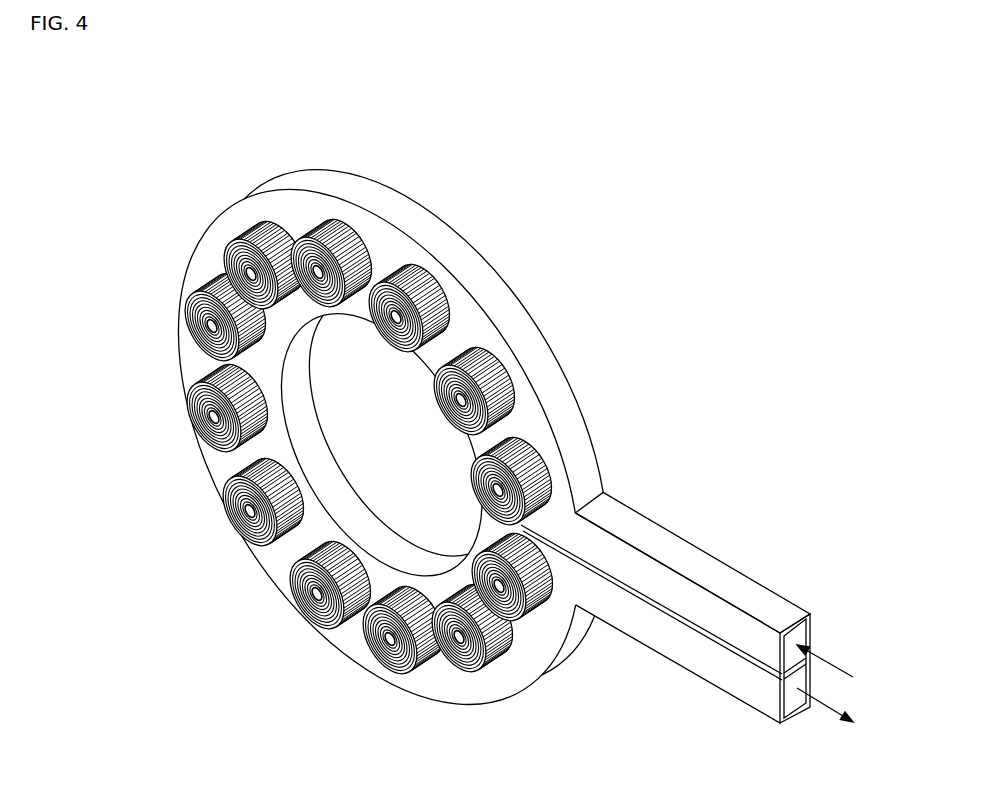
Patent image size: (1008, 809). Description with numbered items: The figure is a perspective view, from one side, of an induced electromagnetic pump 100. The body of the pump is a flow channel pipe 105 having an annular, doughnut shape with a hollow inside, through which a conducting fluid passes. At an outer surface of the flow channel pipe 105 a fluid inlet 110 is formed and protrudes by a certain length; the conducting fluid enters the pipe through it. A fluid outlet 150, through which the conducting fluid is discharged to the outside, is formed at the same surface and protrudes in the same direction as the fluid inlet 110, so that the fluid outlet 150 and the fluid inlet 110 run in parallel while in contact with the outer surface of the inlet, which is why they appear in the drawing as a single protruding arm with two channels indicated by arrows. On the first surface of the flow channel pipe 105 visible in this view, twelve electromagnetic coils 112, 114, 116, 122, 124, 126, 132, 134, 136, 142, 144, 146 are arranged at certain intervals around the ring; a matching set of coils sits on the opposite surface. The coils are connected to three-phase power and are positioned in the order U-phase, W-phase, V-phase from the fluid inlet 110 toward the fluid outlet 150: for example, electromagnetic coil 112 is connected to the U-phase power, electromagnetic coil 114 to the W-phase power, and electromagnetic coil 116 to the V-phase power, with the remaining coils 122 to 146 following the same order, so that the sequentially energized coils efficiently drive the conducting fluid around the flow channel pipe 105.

The induced electromagnetic pump 100 is at (59, 82).
The flow channel pipe 105 is at (500, 300).
The fluid inlet 110 is at (800, 632).
The electromagnetic coil 112 is at (548, 478).
The electromagnetic coil 114 is at (507, 385).
The electromagnetic coil 116 is at (423, 275).
The electromagnetic coil 122 is at (328, 215).
The electromagnetic coil 124 is at (257, 232).
The electromagnetic coil 126 is at (200, 285).
The electromagnetic coil 132 is at (185, 413).
The electromagnetic coil 134 is at (222, 518).
The electromagnetic coil 136 is at (298, 610).
The electromagnetic coil 142 is at (375, 662).
The electromagnetic coil 144 is at (458, 660).
The electromagnetic coil 146 is at (523, 620).
The fluid outlet 150 is at (802, 718).